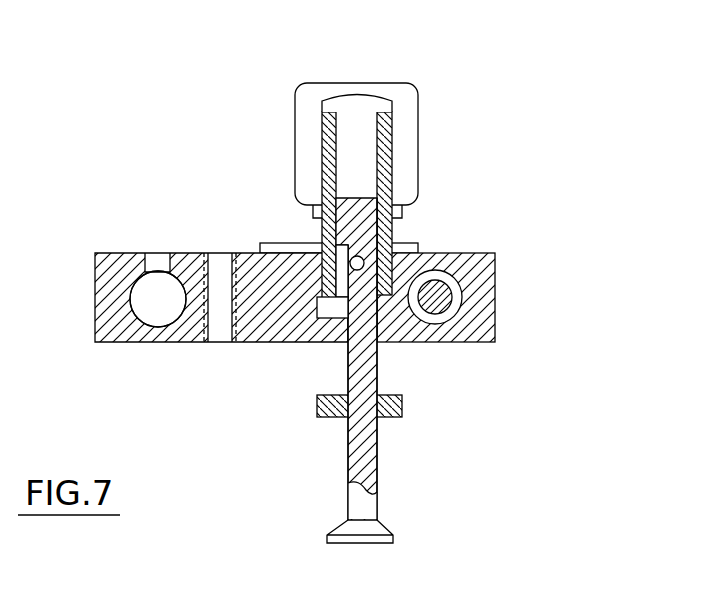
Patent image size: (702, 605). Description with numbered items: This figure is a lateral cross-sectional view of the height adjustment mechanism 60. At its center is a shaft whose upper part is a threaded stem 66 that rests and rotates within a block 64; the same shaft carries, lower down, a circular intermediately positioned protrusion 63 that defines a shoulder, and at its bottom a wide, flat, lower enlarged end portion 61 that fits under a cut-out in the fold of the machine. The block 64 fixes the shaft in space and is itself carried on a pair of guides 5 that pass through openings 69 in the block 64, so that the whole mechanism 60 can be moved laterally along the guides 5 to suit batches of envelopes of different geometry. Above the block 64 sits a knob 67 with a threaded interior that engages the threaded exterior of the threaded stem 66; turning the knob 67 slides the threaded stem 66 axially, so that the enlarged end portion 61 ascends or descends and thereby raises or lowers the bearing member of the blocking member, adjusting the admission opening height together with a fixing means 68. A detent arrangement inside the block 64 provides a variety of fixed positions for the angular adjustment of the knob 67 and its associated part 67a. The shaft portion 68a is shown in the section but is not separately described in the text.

The height adjustment mechanism 60 is at (238, 138).
The knob 67 is at (408, 83).
The knob part 67a is at (322, 147).
The threaded stem 66 is at (392, 228).
The block 64 is at (440, 297).
The guides 5 is at (415, 297).
The circular protrusion 63 is at (402, 408).
The openings 69 is at (140, 312).
The fixing means 68 is at (332, 308).
The shaft 68a is at (345, 375).
The lower enlarged end portion 61 is at (327, 543).